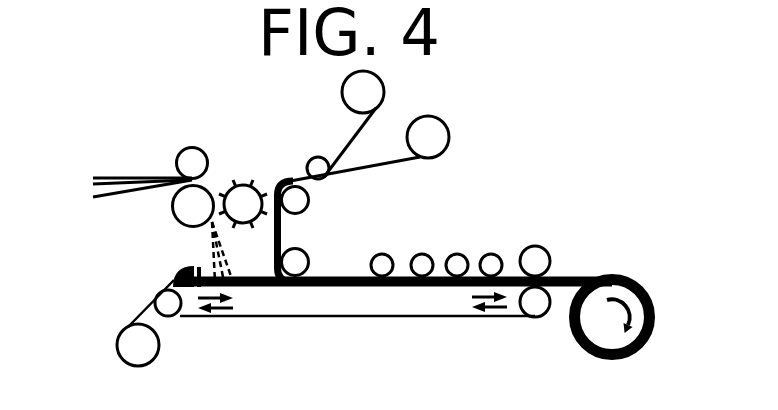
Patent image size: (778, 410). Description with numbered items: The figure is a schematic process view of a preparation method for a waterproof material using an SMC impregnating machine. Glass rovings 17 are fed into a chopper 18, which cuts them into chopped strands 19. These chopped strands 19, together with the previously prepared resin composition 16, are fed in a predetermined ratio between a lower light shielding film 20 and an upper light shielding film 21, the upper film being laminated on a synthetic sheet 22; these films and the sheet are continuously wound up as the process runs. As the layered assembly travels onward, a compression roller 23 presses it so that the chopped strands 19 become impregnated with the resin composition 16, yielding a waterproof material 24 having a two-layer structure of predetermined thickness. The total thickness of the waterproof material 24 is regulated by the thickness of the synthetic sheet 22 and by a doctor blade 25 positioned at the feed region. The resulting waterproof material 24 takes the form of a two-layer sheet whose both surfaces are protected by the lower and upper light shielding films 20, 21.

The resin composition (A2) 16 is at (172, 276).
The glass rovings 17 is at (130, 177).
The chopper 18 is at (250, 182).
The chopped strands 19 is at (213, 250).
The lower light shielding film 20 is at (130, 320).
The upper light shielding film 21 is at (407, 161).
The synthetic sheet 22 is at (350, 140).
The compression roller 23 is at (457, 252).
The waterproof material 24 is at (617, 277).
The doctor blade 25 is at (200, 265).